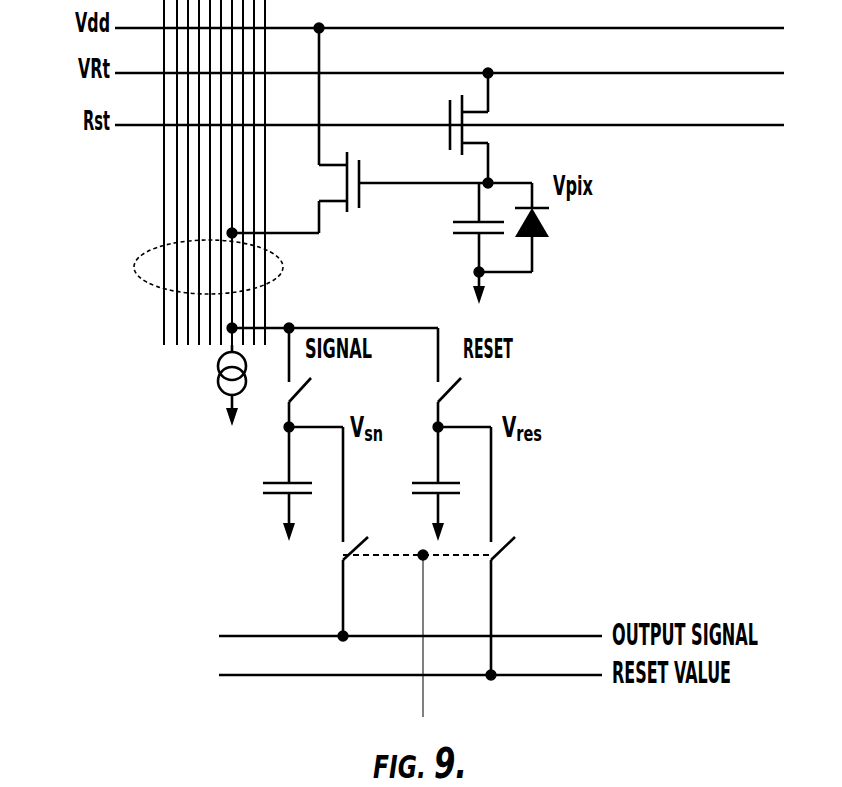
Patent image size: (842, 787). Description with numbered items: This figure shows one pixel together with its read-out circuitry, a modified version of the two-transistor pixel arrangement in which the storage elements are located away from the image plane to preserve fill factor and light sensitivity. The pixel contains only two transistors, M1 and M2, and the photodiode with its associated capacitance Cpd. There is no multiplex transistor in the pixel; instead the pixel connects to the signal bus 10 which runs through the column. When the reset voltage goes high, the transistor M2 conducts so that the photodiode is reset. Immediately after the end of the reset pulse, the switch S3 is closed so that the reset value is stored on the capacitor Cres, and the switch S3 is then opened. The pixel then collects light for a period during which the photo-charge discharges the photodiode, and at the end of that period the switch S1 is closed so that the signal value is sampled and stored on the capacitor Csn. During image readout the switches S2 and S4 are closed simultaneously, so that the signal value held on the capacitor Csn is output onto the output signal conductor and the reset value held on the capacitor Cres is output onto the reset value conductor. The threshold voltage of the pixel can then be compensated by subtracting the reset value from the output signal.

The signal bus 10 is at (142, 280).
The transistor M1 is at (379, 130).
The transistor M2 is at (499, 128).
The photodiode capacitance Cpd is at (460, 243).
The switch S1 is at (313, 377).
The switch S2 is at (335, 589).
The switch S3 is at (461, 377).
The switch S4 is at (513, 608).
The capacitor Csn is at (276, 484).
The capacitor Cres is at (426, 484).